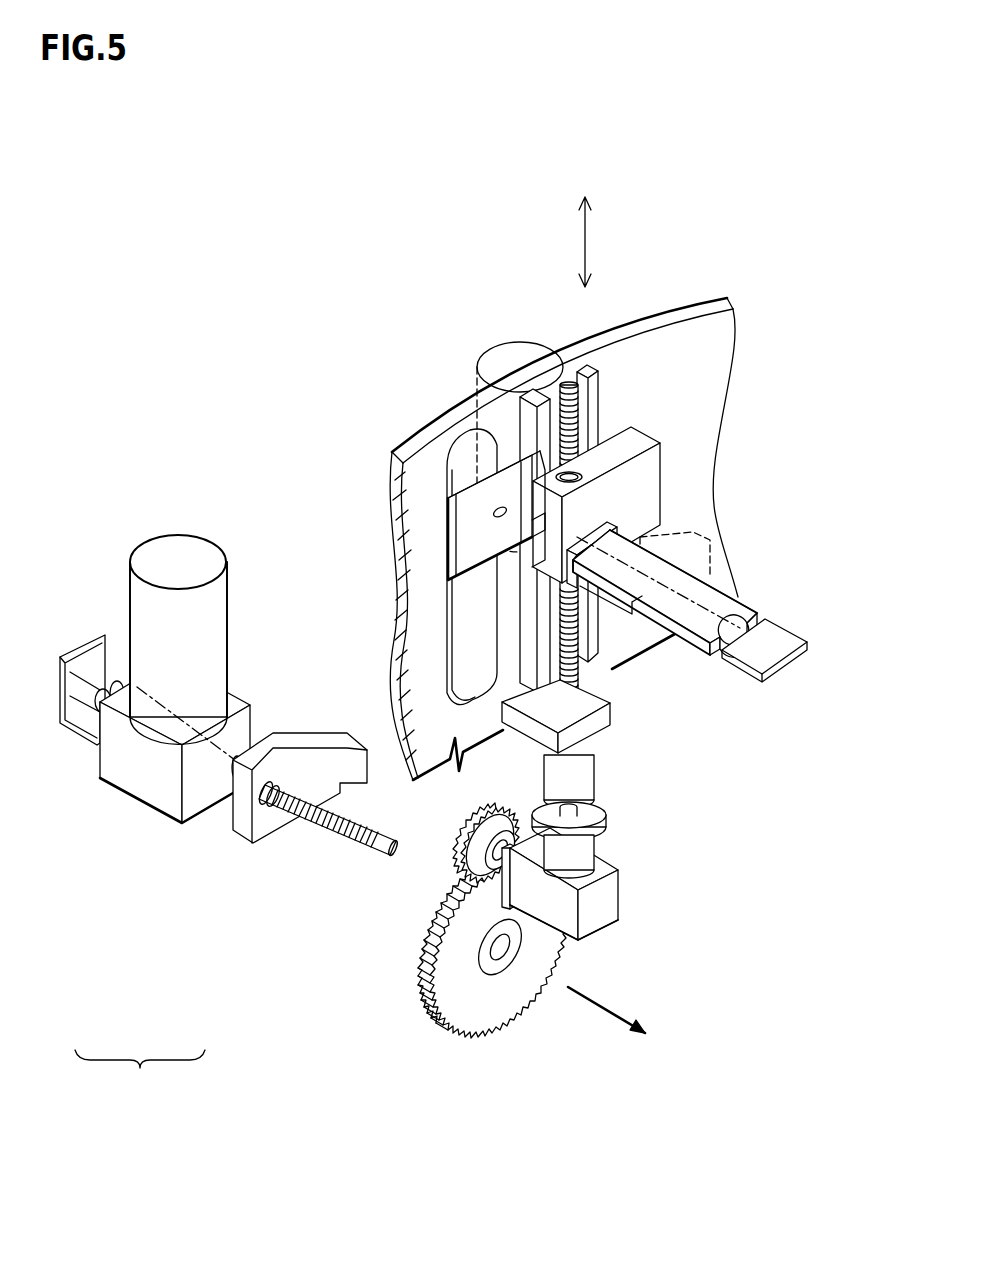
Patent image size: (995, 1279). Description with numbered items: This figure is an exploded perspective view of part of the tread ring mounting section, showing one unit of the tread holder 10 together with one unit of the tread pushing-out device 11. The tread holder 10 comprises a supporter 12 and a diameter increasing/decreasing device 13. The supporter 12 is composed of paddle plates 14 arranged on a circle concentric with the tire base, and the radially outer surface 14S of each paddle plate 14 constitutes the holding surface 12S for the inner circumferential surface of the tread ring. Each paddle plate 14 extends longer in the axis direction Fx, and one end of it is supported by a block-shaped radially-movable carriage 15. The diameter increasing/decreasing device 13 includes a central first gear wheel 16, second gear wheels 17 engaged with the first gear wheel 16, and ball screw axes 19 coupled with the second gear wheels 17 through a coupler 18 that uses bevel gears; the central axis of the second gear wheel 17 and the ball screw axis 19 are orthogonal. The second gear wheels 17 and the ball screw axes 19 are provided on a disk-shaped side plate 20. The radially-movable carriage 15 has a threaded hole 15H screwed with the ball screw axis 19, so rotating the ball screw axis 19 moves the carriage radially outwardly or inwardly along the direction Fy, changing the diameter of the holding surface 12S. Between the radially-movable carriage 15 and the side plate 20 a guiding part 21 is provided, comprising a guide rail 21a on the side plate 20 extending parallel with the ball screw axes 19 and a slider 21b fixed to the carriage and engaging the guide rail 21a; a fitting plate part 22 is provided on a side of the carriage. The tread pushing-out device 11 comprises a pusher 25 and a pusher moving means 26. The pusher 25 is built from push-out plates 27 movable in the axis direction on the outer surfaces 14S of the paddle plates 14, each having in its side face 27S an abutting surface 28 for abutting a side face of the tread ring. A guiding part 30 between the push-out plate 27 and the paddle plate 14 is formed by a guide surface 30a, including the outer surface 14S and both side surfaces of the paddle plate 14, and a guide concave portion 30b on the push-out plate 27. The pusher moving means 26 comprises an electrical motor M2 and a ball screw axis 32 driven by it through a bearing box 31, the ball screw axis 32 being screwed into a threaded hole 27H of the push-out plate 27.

The tread holder 10 is at (770, 875).
The tread pushing-out device 11 is at (477, 382).
The supporter 12 is at (757, 712).
The holding surface 12S is at (777, 640).
The diameter increasing/decreasing device 13 is at (640, 811).
The paddle plate 14 is at (689, 577).
The radially outer surface 14S is at (740, 613).
The radially-movable carriage 15 is at (650, 477).
The threaded hole 15H is at (598, 472).
The first gear wheel 16 is at (458, 970).
The second gear wheel 17 is at (470, 870).
The coupler 18 is at (603, 903).
The ball screw axis 19 is at (592, 680).
The side plate 20 is at (420, 490).
The guiding part 21 is at (767, 212).
The guide rail 21a is at (597, 368).
The slider 21b is at (590, 425).
The fitting plate part 22 is at (480, 497).
The pusher 25 is at (175, 854).
The pusher moving means 26 is at (157, 868).
The push-out plate 27 is at (230, 833).
The threaded hole 27H is at (293, 743).
The side face 27S is at (301, 893).
The abutting surface 28 is at (278, 818).
The guiding part 30 is at (308, 758).
The guide surface 30a is at (743, 650).
The guide concave portion 30b is at (357, 777).
The bearing box 31 is at (145, 787).
The ball screw axis 32 is at (322, 822).
The electrical motor M2 is at (150, 613).
The axis direction Fx is at (603, 1012).
The vertical force direction Fy is at (590, 232).